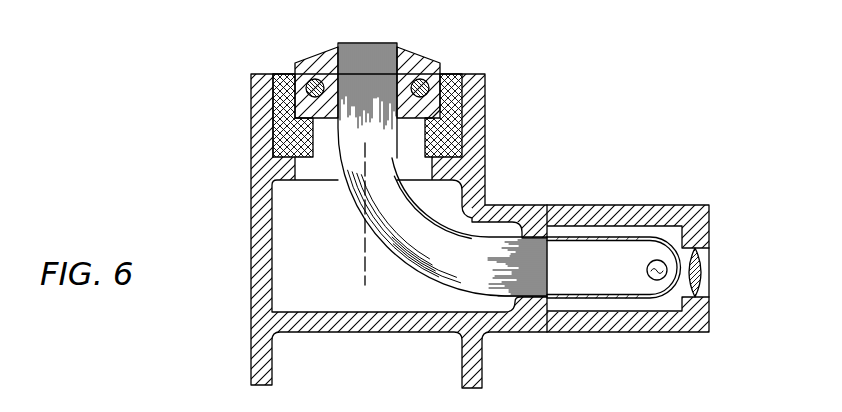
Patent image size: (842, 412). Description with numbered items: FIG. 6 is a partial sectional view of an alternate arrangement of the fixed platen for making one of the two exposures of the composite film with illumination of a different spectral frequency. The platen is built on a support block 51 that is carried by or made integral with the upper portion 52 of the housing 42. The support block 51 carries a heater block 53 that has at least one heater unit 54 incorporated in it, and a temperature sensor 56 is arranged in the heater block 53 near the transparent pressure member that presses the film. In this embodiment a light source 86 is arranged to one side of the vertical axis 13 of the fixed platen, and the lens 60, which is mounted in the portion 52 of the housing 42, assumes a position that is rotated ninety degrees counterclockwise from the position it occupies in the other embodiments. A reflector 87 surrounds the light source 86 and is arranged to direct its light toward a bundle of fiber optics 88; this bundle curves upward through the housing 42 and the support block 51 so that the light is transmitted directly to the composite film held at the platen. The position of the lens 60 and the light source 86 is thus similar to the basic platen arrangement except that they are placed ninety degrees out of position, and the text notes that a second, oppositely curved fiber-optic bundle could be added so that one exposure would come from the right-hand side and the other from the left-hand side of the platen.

The vertical axis 13 is at (365, 274).
The housing 42 is at (255, 339).
The support block 51 is at (282, 106).
The upper portion of the housing 52 is at (257, 173).
The heater block 53 is at (452, 93).
The heater unit 54 is at (316, 79).
The temperature sensor 56 is at (400, 72).
The lens 60 is at (700, 275).
The light source 86 is at (665, 262).
The reflector 87 is at (588, 237).
The bundle of fiber optics 88 is at (353, 198).